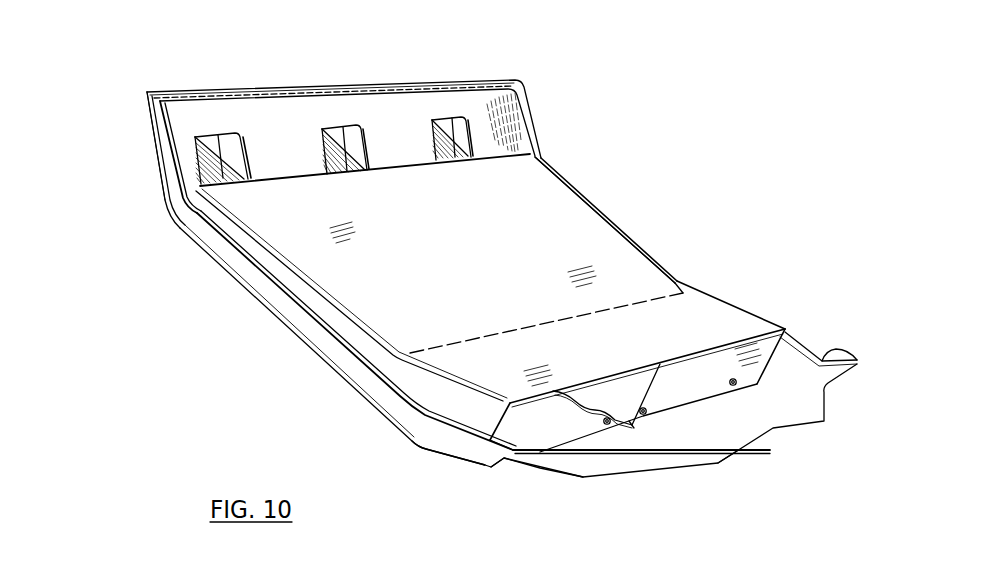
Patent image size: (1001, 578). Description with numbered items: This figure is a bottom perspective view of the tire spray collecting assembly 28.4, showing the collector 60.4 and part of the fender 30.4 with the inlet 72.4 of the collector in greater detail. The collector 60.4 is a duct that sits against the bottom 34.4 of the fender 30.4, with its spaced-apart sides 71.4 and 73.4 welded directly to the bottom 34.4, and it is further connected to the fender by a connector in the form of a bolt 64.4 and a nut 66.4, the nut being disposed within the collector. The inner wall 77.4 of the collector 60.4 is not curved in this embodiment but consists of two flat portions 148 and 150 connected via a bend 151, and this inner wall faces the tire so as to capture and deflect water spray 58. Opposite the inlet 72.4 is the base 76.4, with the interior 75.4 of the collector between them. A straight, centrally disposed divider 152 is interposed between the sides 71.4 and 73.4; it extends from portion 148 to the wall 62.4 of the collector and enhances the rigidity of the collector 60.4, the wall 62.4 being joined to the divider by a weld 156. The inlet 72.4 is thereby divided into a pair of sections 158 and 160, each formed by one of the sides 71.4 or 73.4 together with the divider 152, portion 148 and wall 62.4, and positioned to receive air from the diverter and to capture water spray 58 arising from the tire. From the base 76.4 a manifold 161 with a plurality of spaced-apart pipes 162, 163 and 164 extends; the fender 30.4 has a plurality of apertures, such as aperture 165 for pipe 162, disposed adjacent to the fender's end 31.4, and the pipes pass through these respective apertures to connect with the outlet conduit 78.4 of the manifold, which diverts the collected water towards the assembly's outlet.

The tire spray collecting assembly 28.4 is at (93, 106).
The fender 30.4 is at (858, 362).
The end of fender 31.4 is at (522, 84).
The bottom of fender 34.4 is at (687, 387).
The water spray 58 is at (737, 410).
The collector 60.4 is at (614, 250).
The wall of collector 62.4 is at (533, 433).
The bolt 64.4 is at (580, 419).
The nut 66.4 is at (607, 428).
The side of collector 71.4 is at (683, 281).
The inlet of collector 72.4 is at (758, 348).
The side of collector 73.4 is at (442, 398).
The interior of collector 75.4 is at (524, 430).
The base of collector 76.4 is at (274, 182).
The inner wall of collector 77.4 is at (382, 305).
The outlet conduit 78.4 is at (195, 172).
The flat portion of inner wall 148 is at (615, 353).
The flat portion of inner wall 150 is at (443, 250).
The bend 151 is at (462, 330).
The divider 152 is at (600, 401).
The weld 156 is at (629, 421).
The section of inlet 158 is at (673, 377).
The section of inlet 160 is at (553, 398).
The manifold 161 is at (143, 117).
The pipe 162 is at (449, 157).
The pipe 163 is at (336, 165).
The pipe 164 is at (200, 162).
The aperture 165 is at (437, 119).